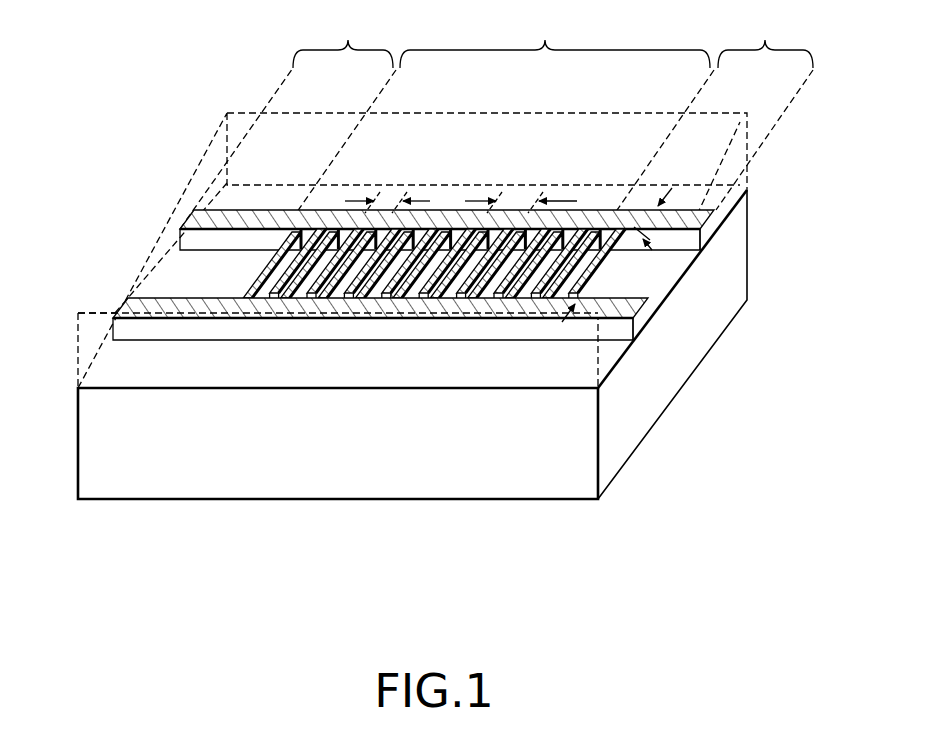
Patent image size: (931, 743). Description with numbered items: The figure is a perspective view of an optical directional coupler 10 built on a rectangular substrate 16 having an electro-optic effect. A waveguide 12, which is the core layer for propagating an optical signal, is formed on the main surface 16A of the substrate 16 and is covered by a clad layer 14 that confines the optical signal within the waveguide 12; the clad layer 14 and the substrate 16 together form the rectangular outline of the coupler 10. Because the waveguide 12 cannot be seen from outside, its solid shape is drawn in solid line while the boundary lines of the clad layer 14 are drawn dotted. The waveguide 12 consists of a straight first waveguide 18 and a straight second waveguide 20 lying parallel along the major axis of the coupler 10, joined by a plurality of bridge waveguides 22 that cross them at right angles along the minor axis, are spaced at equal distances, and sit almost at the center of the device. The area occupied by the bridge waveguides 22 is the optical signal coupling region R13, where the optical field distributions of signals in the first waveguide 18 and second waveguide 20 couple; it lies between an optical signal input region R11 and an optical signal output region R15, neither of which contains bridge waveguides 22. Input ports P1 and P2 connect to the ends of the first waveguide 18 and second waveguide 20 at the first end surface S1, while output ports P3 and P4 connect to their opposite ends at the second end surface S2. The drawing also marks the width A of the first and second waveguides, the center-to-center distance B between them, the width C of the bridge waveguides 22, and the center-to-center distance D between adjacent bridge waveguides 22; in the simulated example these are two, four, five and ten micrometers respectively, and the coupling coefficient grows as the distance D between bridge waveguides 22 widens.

The optical directional coupler 10 is at (446, 386).
The waveguide 12 is at (446, 411).
The clad layer 14 is at (718, 211).
The substrate 16 is at (446, 344).
The main surface 16A is at (548, 381).
The first waveguide 18 is at (277, 303).
The second waveguide 20 is at (500, 307).
The bridge waveguides 22 is at (405, 307).
The input port P1 is at (192, 228).
The input port P2 is at (98, 312).
The output port P3 is at (707, 233).
The output port P4 is at (640, 330).
The first end surface S1 is at (97, 337).
The second end surface S2 is at (724, 173).
The optical signal input region R11 is at (343, 36).
The optical signal coupling region R13 is at (499, 117).
The optical signal output region R15 is at (764, 109).
The width of first and second waveguides A is at (653, 223).
The distance between centers of first and second waveguides B is at (584, 292).
The width of bridge waveguides C is at (387, 191).
The distance between centers of bridge waveguides D is at (521, 191).